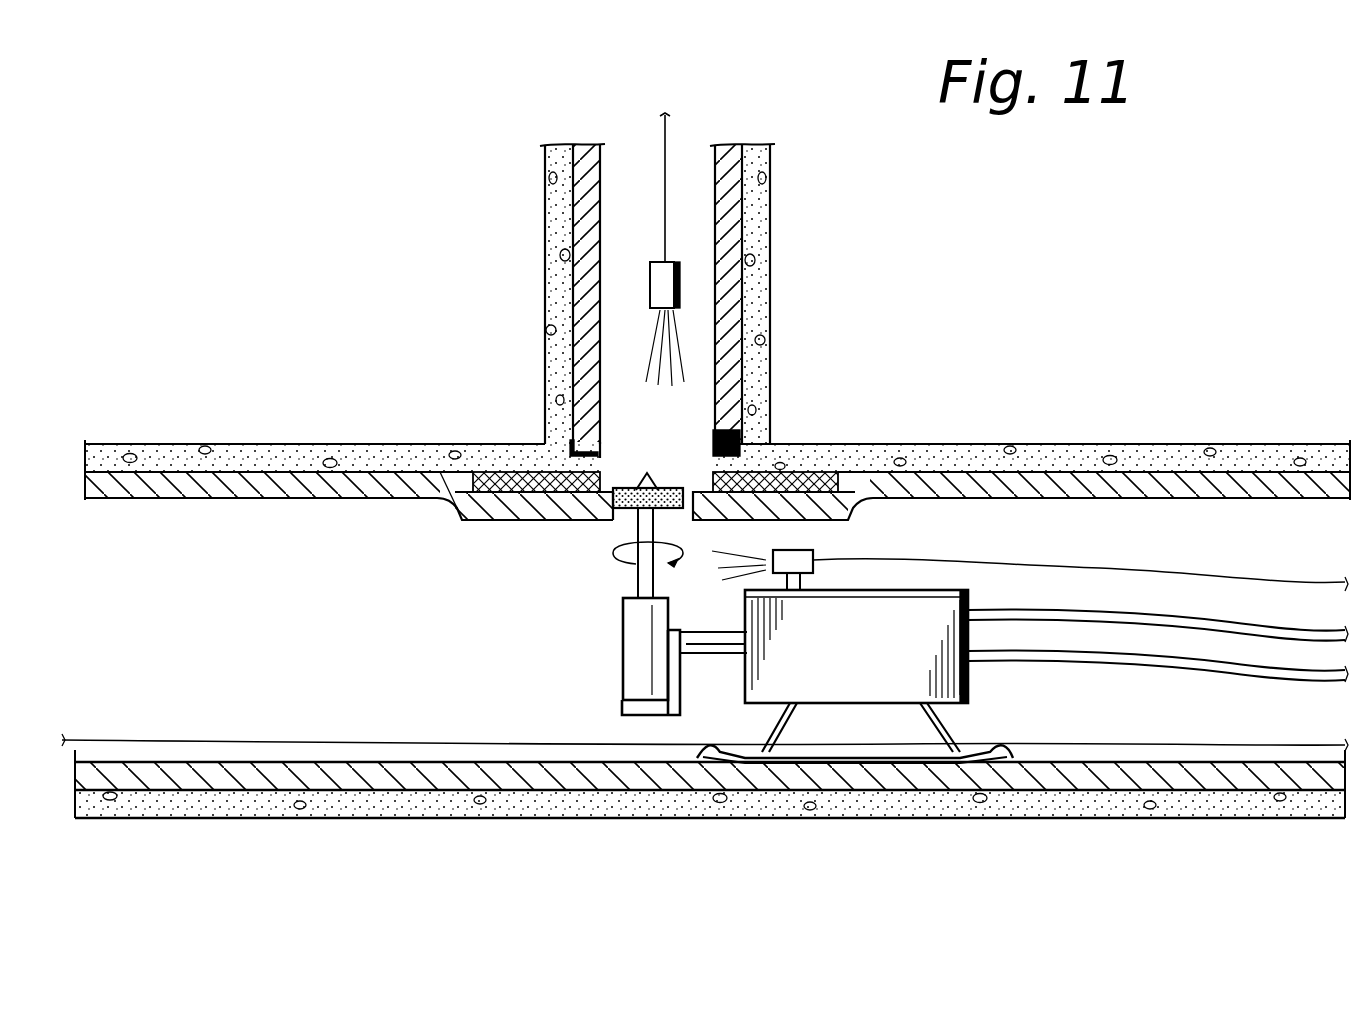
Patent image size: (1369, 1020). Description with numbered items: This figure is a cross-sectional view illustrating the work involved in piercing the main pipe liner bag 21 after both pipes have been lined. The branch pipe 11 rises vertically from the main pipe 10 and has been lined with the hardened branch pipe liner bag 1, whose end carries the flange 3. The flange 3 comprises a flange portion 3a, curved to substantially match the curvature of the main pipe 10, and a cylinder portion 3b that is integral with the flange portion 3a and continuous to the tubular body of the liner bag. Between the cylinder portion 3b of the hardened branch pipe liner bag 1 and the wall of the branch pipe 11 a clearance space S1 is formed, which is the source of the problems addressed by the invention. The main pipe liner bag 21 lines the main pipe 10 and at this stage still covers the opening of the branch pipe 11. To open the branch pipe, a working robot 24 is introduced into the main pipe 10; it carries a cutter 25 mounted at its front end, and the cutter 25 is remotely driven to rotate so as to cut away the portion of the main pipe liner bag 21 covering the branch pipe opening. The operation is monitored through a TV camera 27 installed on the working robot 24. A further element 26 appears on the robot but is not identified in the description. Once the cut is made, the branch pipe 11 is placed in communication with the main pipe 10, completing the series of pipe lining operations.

The branch pipe liner bag 1 is at (604, 206).
The branch pipe 11 is at (770, 283).
The TV camera 27 is at (653, 283).
The flange 3 is at (717, 422).
The flange portion 3a is at (806, 472).
The cylinder portion 3b is at (742, 437).
The clearance space S1 is at (603, 454).
The cutter 25 is at (668, 486).
The main pipe liner bag 21 is at (488, 522).
The knob / emitter 26 is at (825, 553).
The working robot 24 is at (968, 688).
The main pipe 10 is at (1000, 820).